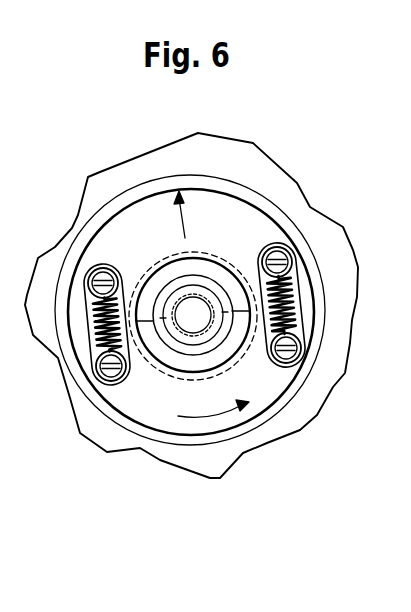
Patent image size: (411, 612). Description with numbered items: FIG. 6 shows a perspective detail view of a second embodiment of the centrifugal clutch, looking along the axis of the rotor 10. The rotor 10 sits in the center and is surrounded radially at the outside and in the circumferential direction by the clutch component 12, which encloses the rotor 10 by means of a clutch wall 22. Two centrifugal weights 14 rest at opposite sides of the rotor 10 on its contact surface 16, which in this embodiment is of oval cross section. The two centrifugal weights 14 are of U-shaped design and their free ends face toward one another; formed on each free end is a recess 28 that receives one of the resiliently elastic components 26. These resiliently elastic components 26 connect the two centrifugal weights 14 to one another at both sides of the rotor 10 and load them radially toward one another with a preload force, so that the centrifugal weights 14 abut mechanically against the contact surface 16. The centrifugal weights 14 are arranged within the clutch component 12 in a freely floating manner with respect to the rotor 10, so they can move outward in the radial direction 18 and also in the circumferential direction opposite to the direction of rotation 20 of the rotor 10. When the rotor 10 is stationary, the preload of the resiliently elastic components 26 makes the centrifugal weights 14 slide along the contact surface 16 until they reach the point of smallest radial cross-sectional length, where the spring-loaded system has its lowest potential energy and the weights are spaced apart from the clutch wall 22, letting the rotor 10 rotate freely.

The rotor 10 is at (213, 291).
The clutch component 12 is at (101, 450).
The centrifugal weight 14 is at (154, 246).
The contact surface 16 is at (247, 358).
The radial direction 18 is at (187, 232).
The direction of rotation 20 is at (180, 418).
The clutch wall 22 is at (133, 197).
The resiliently elastic component 26 is at (86, 338).
The recess 28 is at (88, 300).